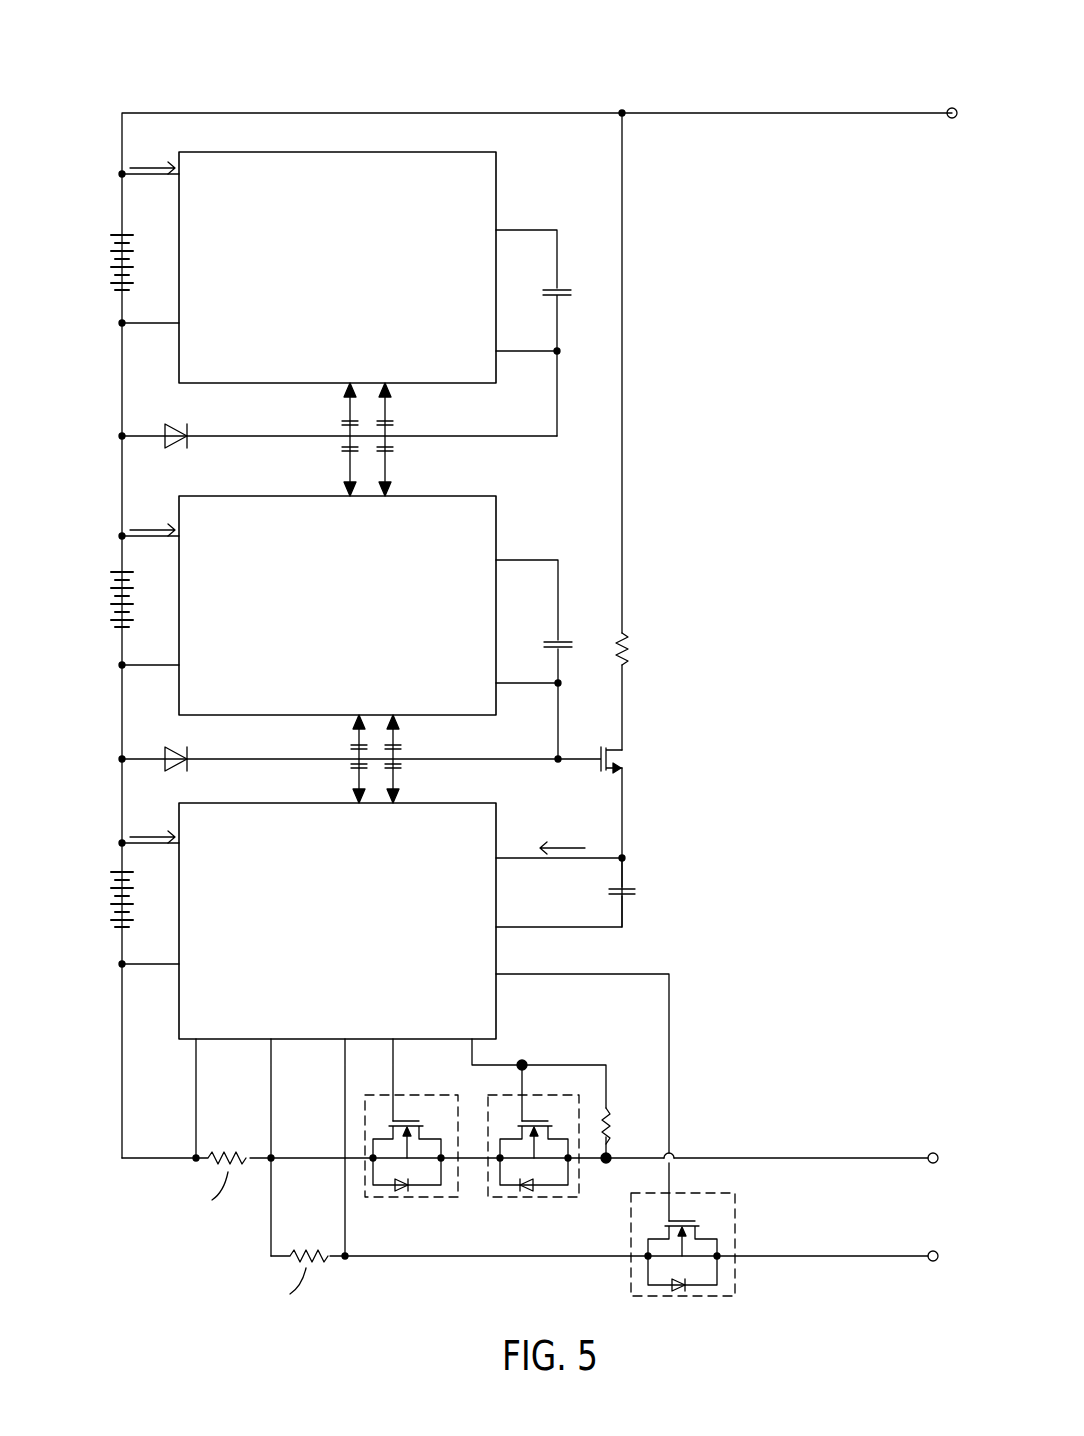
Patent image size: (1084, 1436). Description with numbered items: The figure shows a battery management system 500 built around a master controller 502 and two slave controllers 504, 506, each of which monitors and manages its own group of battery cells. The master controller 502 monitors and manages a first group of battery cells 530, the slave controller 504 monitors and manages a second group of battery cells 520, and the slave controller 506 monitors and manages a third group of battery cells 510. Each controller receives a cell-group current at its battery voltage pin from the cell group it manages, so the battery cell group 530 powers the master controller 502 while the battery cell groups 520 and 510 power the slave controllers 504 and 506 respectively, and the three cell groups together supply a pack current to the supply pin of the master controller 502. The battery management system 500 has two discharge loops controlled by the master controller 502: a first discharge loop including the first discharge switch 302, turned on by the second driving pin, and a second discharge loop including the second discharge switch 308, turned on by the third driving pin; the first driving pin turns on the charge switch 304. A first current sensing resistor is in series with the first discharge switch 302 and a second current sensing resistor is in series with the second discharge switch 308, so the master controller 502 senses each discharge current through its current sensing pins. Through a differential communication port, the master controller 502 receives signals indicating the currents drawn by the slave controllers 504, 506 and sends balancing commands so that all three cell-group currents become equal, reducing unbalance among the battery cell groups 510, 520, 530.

The battery management system 500 is at (140, 76).
The master controller 502 is at (497, 838).
The slave controller 504 is at (497, 536).
The slave controller 506 is at (497, 192).
The third group of battery cells 510 is at (118, 235).
The second group of battery cells 520 is at (118, 572).
The first group of battery cells 530 is at (118, 872).
The first discharge switch 302 is at (458, 1172).
The charge switch 304 is at (552, 1198).
The second discharge switch 308 is at (736, 1212).